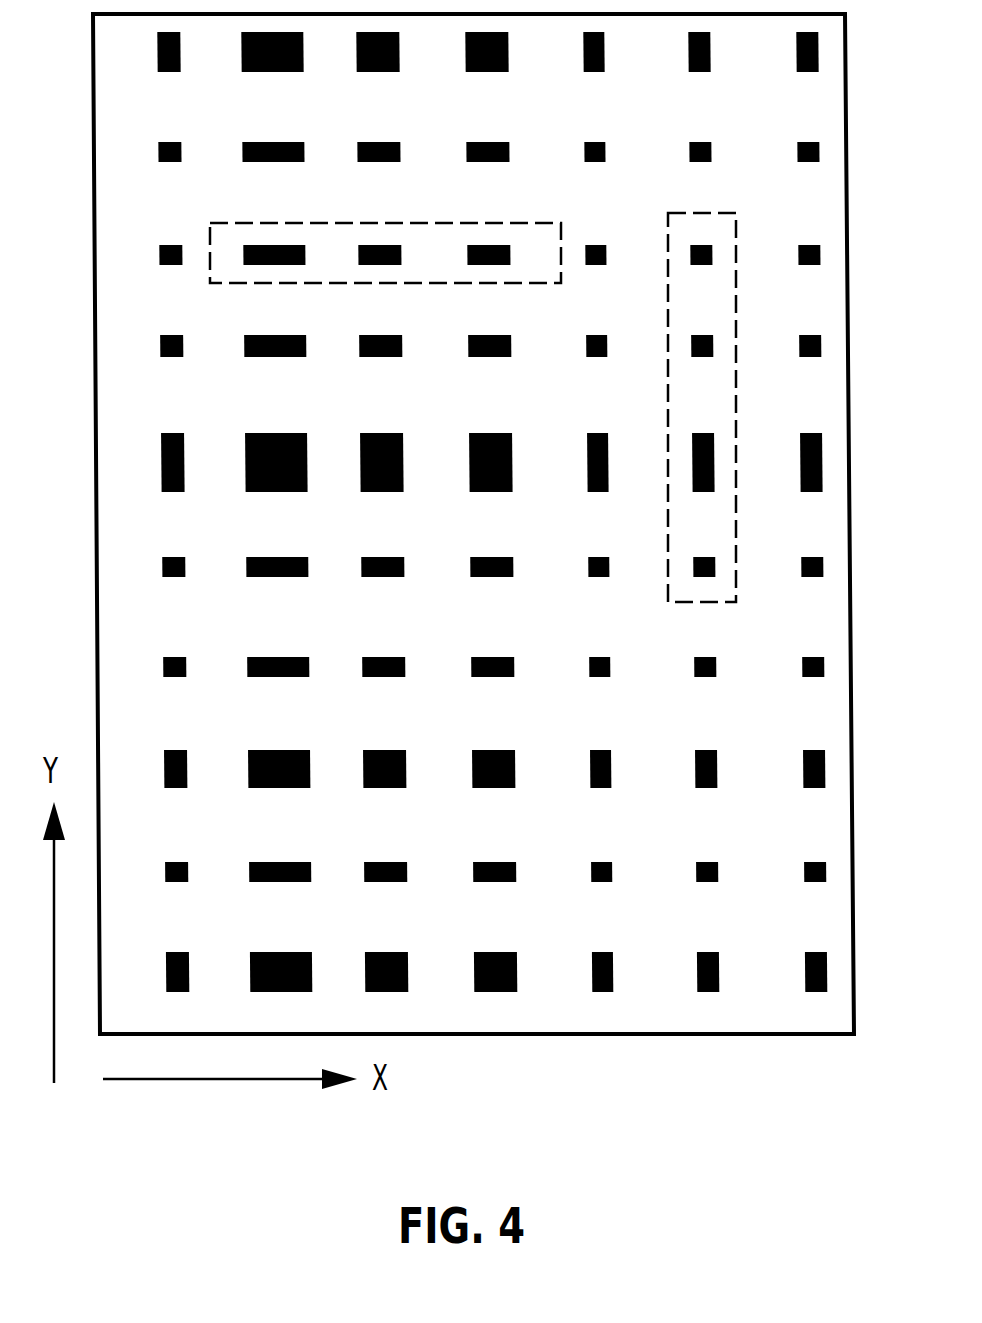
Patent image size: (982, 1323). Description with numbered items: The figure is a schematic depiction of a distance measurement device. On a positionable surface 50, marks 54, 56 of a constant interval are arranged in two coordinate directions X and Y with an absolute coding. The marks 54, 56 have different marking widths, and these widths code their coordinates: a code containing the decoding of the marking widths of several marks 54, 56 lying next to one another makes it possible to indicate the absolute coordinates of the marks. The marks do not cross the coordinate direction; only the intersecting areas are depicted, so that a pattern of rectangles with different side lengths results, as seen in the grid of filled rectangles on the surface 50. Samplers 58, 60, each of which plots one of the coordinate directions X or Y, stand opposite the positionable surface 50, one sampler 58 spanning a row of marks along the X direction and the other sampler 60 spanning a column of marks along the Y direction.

The positionable surface 50 is at (822, 919).
The marks 54 is at (703, 992).
The marks 56 is at (823, 563).
The sampler 58 is at (222, 284).
The sampler 60 is at (718, 307).